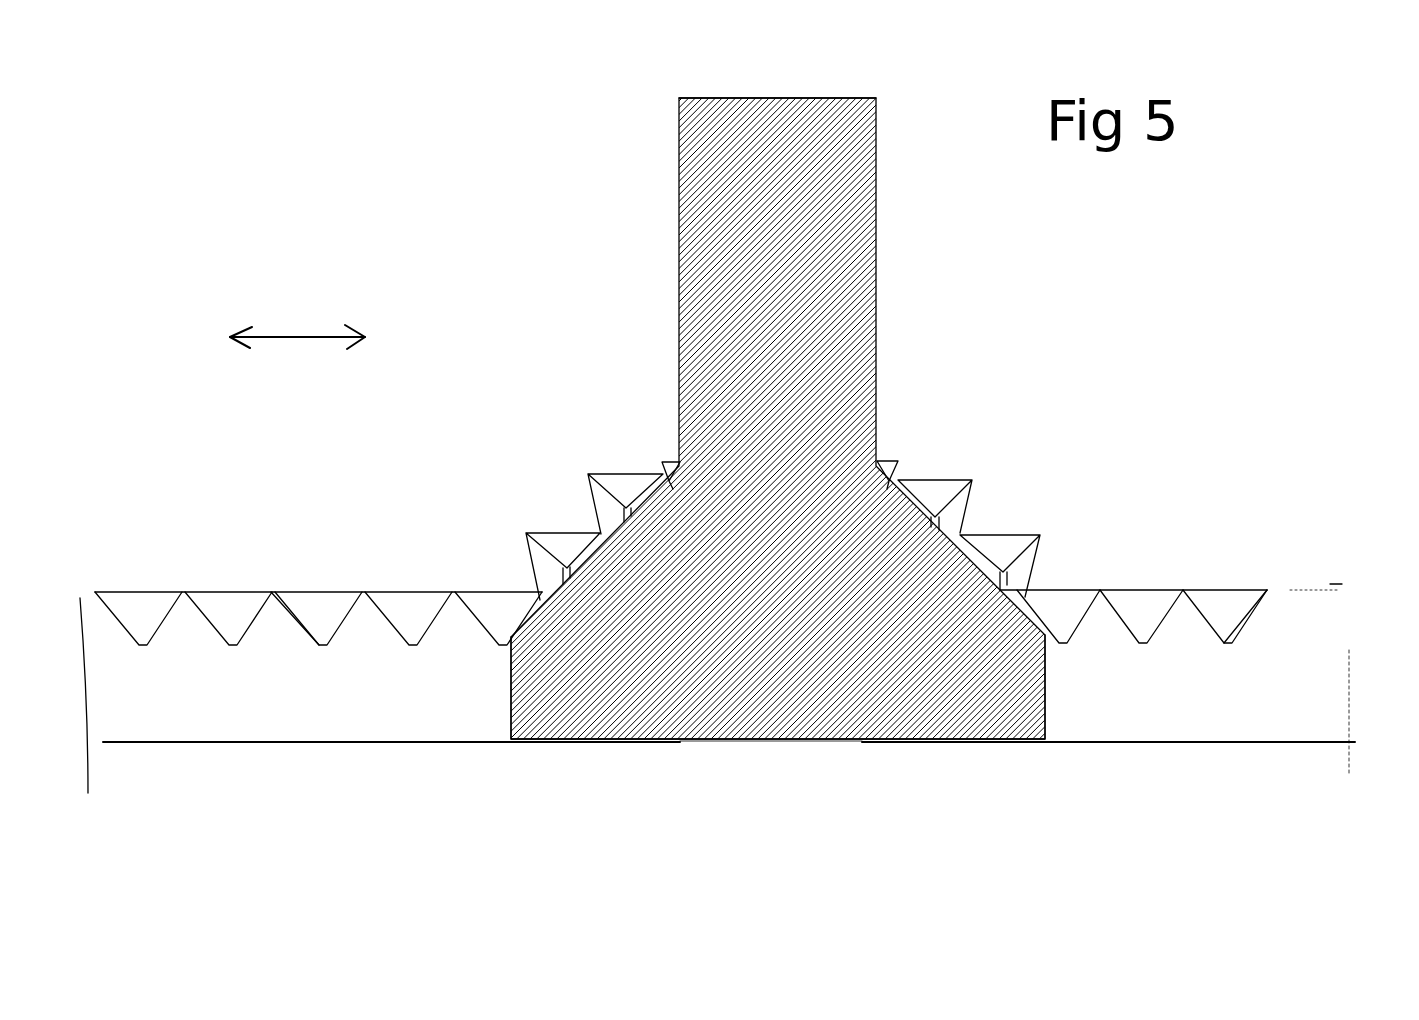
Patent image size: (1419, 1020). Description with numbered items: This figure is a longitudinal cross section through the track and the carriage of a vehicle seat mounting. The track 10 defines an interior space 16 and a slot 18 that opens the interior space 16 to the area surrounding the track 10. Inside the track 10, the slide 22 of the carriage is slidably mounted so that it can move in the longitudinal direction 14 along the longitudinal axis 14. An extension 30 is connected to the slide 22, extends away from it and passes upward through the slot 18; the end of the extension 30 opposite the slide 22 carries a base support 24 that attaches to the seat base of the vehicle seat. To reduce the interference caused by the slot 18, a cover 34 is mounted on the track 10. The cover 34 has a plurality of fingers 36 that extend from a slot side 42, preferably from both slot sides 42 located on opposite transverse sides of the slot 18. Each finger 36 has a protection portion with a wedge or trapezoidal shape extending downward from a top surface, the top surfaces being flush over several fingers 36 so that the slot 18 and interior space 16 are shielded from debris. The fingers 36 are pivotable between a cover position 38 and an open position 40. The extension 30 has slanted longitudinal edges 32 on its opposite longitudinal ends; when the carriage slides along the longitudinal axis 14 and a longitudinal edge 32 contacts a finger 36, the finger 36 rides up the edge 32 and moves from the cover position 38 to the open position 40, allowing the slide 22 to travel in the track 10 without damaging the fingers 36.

The track 10 is at (1353, 655).
The longitudinal direction 14 is at (293, 336).
The interior space 16 is at (305, 735).
The slot 18 is at (1308, 575).
The slide 22 is at (1030, 687).
The base support 24 is at (793, 98).
The extension 30 is at (800, 508).
The longitudinal edges 32 is at (607, 547).
The cover 34 is at (292, 499).
The fingers 36 is at (320, 600).
The cover position 38 is at (268, 652).
The open position 40 is at (663, 414).
The slot side 42 is at (1333, 583).